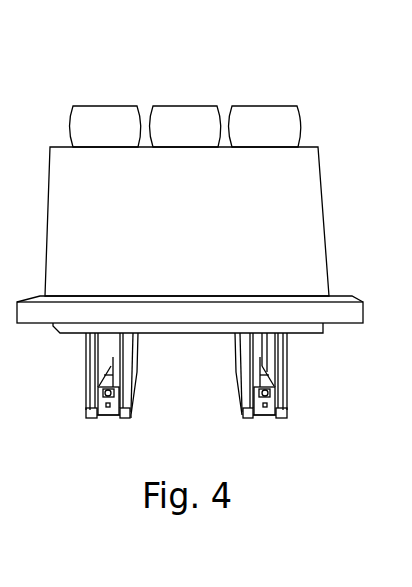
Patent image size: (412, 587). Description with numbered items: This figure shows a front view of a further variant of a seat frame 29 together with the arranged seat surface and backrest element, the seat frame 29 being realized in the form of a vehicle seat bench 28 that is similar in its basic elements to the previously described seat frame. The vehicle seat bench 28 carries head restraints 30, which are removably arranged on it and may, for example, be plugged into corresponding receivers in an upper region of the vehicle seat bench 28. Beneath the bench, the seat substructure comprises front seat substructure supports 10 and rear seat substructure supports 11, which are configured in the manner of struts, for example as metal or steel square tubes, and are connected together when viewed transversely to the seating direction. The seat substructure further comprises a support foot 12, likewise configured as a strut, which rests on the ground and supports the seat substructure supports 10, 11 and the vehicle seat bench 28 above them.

The head restraints 30 is at (112, 103).
The seat frame 29 is at (80, 396).
The vehicle seat bench 28 is at (128, 436).
The front seat substructure supports 10 is at (288, 395).
The rear seat substructure supports 11 is at (270, 343).
The support foot 12 is at (280, 360).